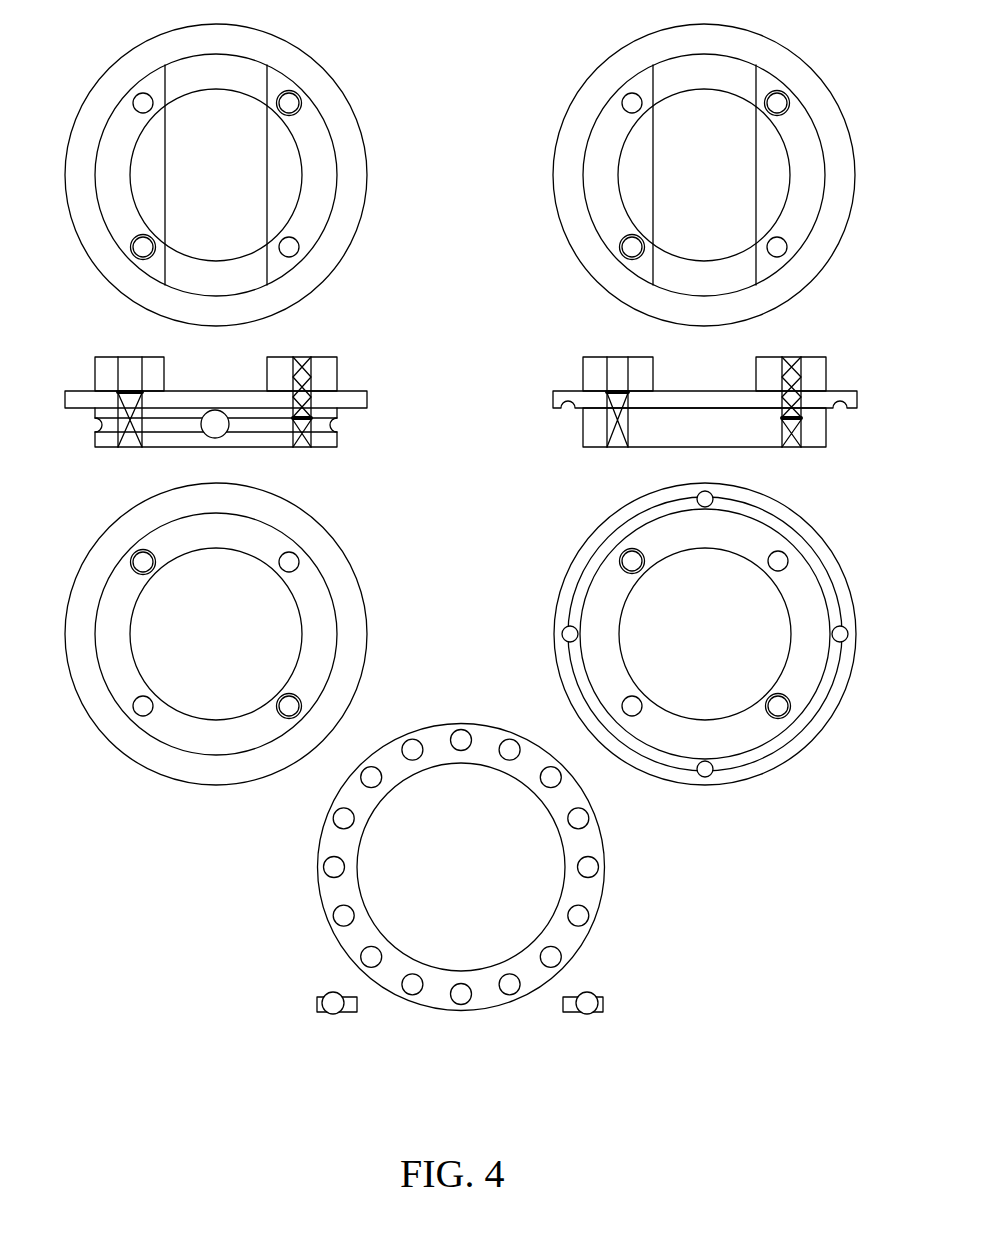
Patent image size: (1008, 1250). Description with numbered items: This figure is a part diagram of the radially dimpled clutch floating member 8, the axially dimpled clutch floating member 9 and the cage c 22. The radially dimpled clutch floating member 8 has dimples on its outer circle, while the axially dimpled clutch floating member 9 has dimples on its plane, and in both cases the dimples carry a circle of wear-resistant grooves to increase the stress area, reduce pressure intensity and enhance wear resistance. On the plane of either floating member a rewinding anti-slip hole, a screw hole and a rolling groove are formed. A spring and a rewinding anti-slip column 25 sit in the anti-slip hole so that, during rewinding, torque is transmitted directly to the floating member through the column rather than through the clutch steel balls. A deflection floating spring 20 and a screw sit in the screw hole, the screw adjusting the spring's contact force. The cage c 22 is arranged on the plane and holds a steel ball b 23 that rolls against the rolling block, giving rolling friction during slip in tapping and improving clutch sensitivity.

The radially dimpled clutch floating member 8 is at (352, 174).
The axially dimpled clutch floating member 9 is at (568, 173).
The deflection floating spring 20 is at (312, 391).
The cage c 22 is at (318, 997).
The steel ball b 23 is at (551, 956).
The rewinding anti-slip column 25 is at (128, 437).